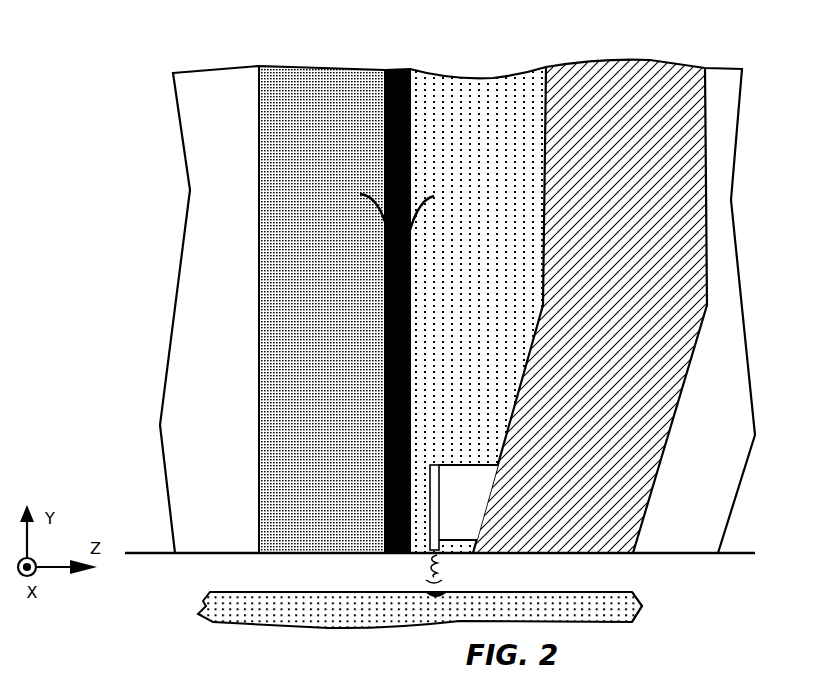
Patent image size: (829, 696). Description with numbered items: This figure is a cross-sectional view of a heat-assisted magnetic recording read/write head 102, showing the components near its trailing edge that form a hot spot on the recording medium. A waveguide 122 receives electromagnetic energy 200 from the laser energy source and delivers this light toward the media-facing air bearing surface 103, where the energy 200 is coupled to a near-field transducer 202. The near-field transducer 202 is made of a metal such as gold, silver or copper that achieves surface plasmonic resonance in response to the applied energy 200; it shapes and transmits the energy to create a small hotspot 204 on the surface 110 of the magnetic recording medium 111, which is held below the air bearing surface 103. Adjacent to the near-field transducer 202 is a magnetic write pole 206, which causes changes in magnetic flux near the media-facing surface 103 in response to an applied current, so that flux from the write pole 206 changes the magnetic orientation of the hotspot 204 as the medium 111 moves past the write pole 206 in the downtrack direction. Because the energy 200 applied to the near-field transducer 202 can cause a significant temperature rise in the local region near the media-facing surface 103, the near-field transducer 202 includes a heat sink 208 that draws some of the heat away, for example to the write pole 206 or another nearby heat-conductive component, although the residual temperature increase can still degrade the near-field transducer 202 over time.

The read/write head 102 is at (158, 42).
The waveguide 122 is at (263, 40).
The magnetic write pole 206 is at (637, 62).
The electromagnetic energy 200 is at (381, 218).
The air bearing surface 103 is at (742, 554).
The near-field transducer 202 is at (428, 562).
The heat sink 208 is at (455, 533).
The surface 110 is at (592, 606).
The hotspot 204 is at (434, 600).
The magnetic recording medium 111 is at (618, 603).